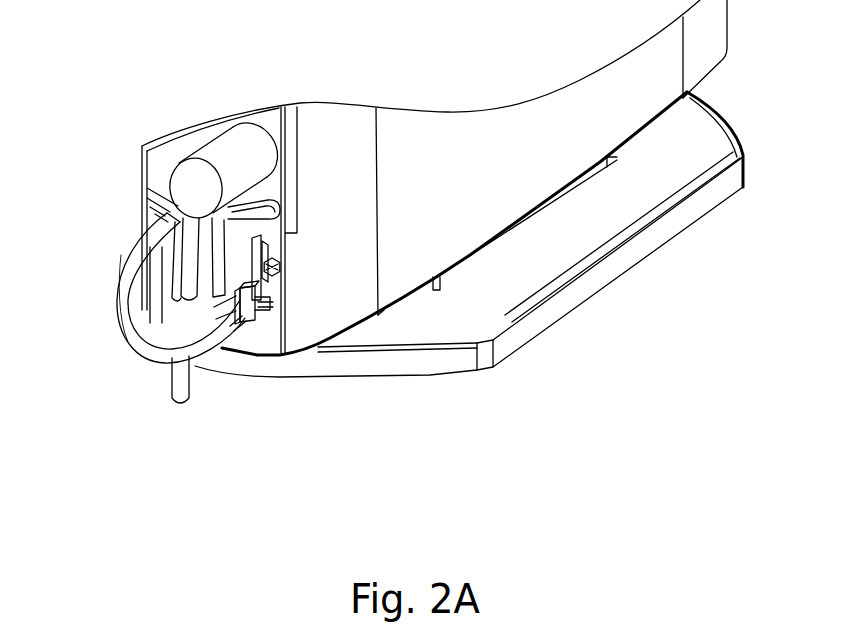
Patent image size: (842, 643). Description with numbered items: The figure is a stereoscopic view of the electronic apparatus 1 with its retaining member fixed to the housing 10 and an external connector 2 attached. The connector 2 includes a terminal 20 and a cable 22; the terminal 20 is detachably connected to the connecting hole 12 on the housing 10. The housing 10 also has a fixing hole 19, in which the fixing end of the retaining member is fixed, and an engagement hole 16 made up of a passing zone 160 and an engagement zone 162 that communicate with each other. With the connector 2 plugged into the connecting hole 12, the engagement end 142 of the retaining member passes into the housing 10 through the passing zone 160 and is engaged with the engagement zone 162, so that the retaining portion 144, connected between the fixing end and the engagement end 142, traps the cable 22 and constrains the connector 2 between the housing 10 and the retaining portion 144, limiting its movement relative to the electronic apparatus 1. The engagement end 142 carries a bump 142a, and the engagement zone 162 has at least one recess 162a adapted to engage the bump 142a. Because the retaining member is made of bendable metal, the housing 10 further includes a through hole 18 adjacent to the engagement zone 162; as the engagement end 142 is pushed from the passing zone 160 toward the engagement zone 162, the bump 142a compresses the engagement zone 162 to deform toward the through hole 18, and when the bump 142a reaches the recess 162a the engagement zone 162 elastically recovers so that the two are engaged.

The electronic apparatus 1 is at (150, 60).
The housing 10 is at (587, 120).
The connecting hole 12 is at (265, 133).
The fixing hole 19 is at (163, 219).
The retaining portion 144 is at (118, 285).
The connector 2 is at (217, 472).
The terminal 20 is at (140, 295).
The cable 22 is at (179, 403).
The engagement end 142 is at (284, 356).
The bump 142a is at (248, 328).
The through hole 18 is at (380, 316).
The engagement hole 16 is at (572, 506).
The passing zone 160 is at (272, 313).
The engagement zone 162 is at (265, 245).
The recess 162a is at (287, 272).